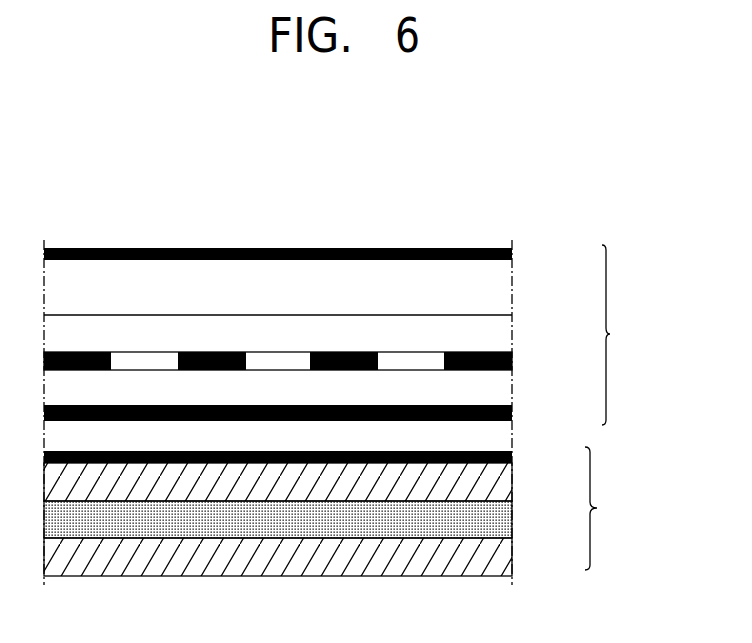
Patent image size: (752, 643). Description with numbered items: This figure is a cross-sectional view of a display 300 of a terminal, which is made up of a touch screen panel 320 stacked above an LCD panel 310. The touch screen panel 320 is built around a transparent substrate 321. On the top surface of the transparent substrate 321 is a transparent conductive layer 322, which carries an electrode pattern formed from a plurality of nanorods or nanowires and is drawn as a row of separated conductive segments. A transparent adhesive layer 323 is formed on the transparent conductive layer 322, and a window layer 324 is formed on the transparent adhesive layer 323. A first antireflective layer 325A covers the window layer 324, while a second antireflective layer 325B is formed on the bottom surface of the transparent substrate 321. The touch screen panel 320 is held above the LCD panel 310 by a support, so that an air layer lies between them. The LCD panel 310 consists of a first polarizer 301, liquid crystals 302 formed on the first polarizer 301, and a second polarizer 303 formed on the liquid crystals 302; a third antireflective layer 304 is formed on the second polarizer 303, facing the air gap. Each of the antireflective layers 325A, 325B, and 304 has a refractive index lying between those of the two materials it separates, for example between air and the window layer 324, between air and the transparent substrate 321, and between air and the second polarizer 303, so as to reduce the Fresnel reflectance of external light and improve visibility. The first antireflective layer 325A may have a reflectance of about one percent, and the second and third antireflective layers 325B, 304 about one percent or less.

The display device 300 is at (654, 194).
The first antireflective layer 325A is at (512, 255).
The window layer 324 is at (512, 287).
The transparent adhesive layer 323 is at (512, 332).
The transparent conductive layer 322 is at (512, 362).
The transparent substrate 321 is at (512, 389).
The second antireflective layer 325B is at (512, 415).
The touch screen panel 320 is at (623, 335).
The third antireflective layer 304 is at (512, 459).
The second polarizer 303 is at (512, 483).
The liquid crystals 302 is at (512, 522).
The first polarizer 301 is at (512, 560).
The LCD panel 310 is at (606, 508).